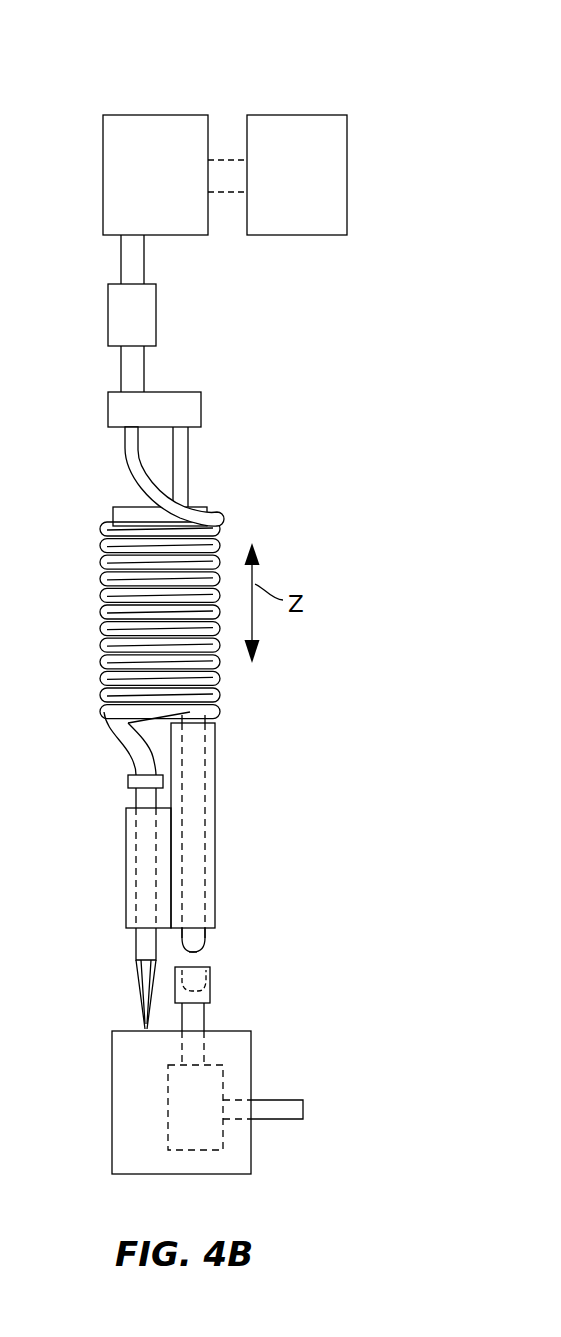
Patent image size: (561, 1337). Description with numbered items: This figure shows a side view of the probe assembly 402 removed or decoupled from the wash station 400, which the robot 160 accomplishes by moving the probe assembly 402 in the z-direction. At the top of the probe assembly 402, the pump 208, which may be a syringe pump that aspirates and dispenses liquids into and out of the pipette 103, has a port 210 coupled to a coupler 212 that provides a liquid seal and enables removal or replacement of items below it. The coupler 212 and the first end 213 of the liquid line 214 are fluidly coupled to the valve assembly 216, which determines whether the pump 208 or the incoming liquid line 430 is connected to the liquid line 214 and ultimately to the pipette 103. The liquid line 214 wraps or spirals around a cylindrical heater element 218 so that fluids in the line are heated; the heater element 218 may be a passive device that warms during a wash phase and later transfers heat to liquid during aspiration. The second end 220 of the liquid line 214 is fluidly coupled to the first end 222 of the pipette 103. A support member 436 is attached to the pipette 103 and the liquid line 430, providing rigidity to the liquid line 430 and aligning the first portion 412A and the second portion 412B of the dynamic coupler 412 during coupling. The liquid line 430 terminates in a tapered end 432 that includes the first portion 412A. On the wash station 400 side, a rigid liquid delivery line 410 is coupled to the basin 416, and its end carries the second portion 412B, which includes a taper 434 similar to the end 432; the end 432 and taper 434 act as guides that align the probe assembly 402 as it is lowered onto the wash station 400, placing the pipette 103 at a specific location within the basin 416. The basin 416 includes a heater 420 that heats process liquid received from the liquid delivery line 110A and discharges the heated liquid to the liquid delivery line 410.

The probe assembly 402 is at (118, 68).
The pump 208 is at (150, 115).
The robot 160 is at (293, 115).
The port 210 is at (121, 244).
The coupler 212 is at (108, 313).
The valve assembly 216 is at (180, 392).
The first end 213 is at (125, 447).
The liquid line 214 is at (126, 465).
The liquid line 430 is at (188, 481).
The heater element 218 is at (114, 506).
The second end 220 is at (125, 742).
The first end 222 is at (129, 800).
The support member 436 is at (217, 872).
The pipette 103 is at (133, 945).
The dynamic coupler 412 is at (213, 1003).
The first portion 412A is at (205, 935).
The end 432 is at (206, 949).
The second portion 412B is at (210, 968).
The taper 434 is at (210, 980).
The liquid delivery line 410 is at (205, 1012).
The wash station 400 is at (318, 1071).
The basin 416 is at (112, 1143).
The heater 420 is at (223, 1146).
The liquid delivery line 110A is at (283, 1120).